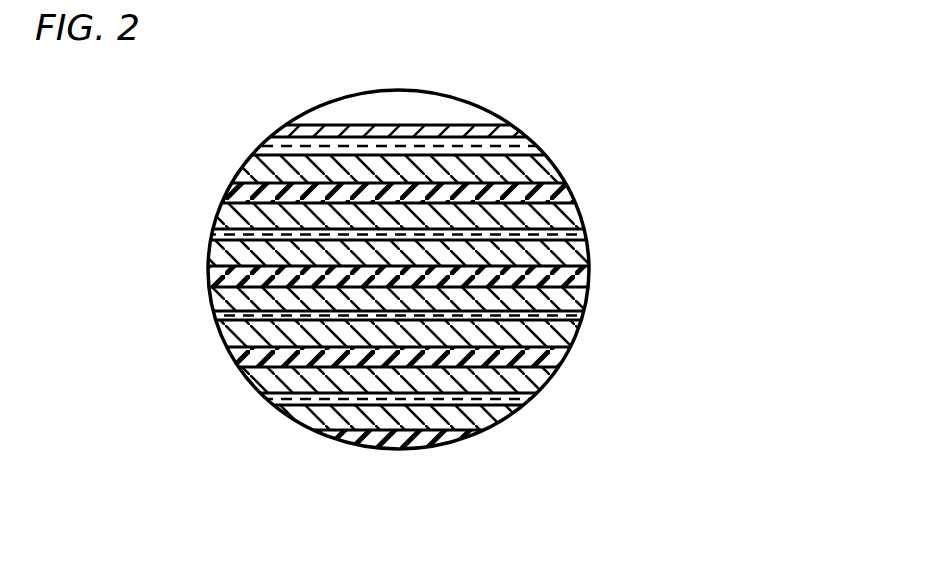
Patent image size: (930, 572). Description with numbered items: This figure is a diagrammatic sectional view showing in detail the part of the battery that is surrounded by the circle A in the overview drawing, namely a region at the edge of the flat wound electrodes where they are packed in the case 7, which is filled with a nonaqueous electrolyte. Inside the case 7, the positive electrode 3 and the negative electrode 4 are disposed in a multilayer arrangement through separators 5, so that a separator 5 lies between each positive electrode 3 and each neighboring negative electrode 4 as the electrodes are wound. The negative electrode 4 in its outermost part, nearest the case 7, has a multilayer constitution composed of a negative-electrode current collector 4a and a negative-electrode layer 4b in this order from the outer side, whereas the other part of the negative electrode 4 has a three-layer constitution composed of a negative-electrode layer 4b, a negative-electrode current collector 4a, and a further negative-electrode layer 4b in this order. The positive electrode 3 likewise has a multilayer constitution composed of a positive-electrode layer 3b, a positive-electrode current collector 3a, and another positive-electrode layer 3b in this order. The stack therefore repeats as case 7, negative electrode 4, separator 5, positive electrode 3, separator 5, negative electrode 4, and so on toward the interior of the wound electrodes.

The circle A is at (316, 122).
The case 7 is at (516, 134).
The negative electrode 4 is at (622, 108).
The negative-electrode current collector 4a is at (537, 150).
The negative-electrode layer 4b is at (538, 170).
The positive electrode 3 is at (648, 185).
The positive-electrode current collector 3a is at (565, 236).
The positive-electrode layer 3b is at (572, 220).
The separator 5 is at (238, 196).